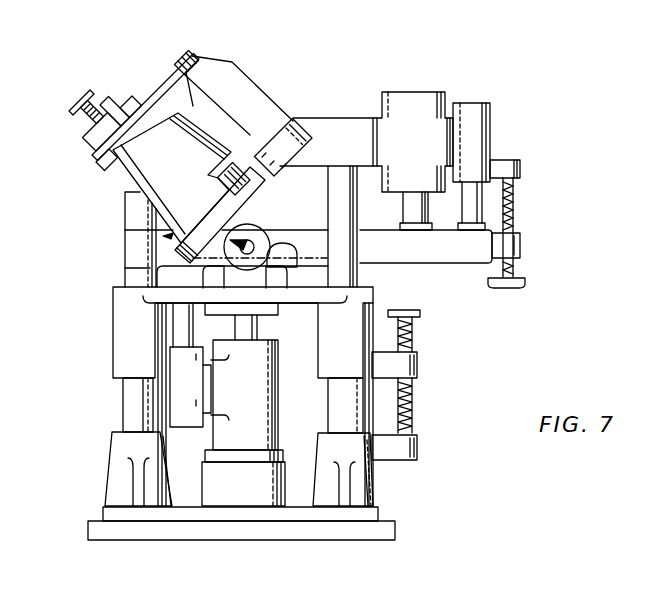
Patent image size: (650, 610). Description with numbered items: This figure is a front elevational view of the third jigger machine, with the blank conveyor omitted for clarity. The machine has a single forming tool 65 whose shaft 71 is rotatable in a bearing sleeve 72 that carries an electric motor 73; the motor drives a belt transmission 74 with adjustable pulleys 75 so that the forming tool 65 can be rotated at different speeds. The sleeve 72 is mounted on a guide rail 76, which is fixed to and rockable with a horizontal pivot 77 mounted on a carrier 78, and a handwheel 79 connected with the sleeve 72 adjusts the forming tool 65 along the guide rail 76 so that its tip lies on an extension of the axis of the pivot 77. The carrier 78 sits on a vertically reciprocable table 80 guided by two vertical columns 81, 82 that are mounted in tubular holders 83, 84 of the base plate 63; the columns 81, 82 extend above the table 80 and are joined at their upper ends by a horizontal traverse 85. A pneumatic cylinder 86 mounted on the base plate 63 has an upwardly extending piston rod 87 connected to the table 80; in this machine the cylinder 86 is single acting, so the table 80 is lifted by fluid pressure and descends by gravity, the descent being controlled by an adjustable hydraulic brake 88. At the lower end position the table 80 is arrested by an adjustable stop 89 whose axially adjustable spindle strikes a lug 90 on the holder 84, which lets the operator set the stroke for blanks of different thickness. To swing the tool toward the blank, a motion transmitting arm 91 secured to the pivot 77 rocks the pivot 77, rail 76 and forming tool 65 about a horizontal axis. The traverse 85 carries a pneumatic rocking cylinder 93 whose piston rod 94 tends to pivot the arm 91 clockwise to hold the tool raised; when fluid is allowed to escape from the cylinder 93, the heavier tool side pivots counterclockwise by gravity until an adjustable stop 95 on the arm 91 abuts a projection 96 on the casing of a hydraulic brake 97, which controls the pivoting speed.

The base plate 63 is at (298, 531).
The forming tool 65 is at (165, 236).
The shaft 71 is at (140, 174).
The bearing sleeve 72 is at (132, 192).
The electric motor 73 is at (233, 78).
The belt transmission 74 is at (163, 75).
The adjustable pulleys 75 is at (190, 50).
The guide rail 76 is at (105, 165).
The horizontal pivot 77 is at (265, 231).
The carrier 78 is at (165, 266).
The handwheel 79 is at (68, 103).
The table 80 is at (113, 303).
The vertical column 81 is at (127, 397).
The vertical column 82 is at (350, 414).
The tubular holder 83 is at (117, 480).
The tubular holder 84 is at (373, 488).
The horizontal traverse 85 is at (328, 128).
The pneumatic cylinder 86 is at (263, 394).
The piston rod 87 is at (258, 320).
The adjustable hydraulic brake 88 is at (180, 415).
The adjustable stop 89 is at (413, 392).
The lug 90 is at (418, 446).
The motion transmitting arm 91 is at (466, 257).
The pneumatic rocking cylinder 93 is at (412, 95).
The piston rod 94 is at (417, 217).
The adjustable stop 95 is at (521, 272).
The projection 96 is at (521, 165).
The hydraulic brake 97 is at (480, 131).